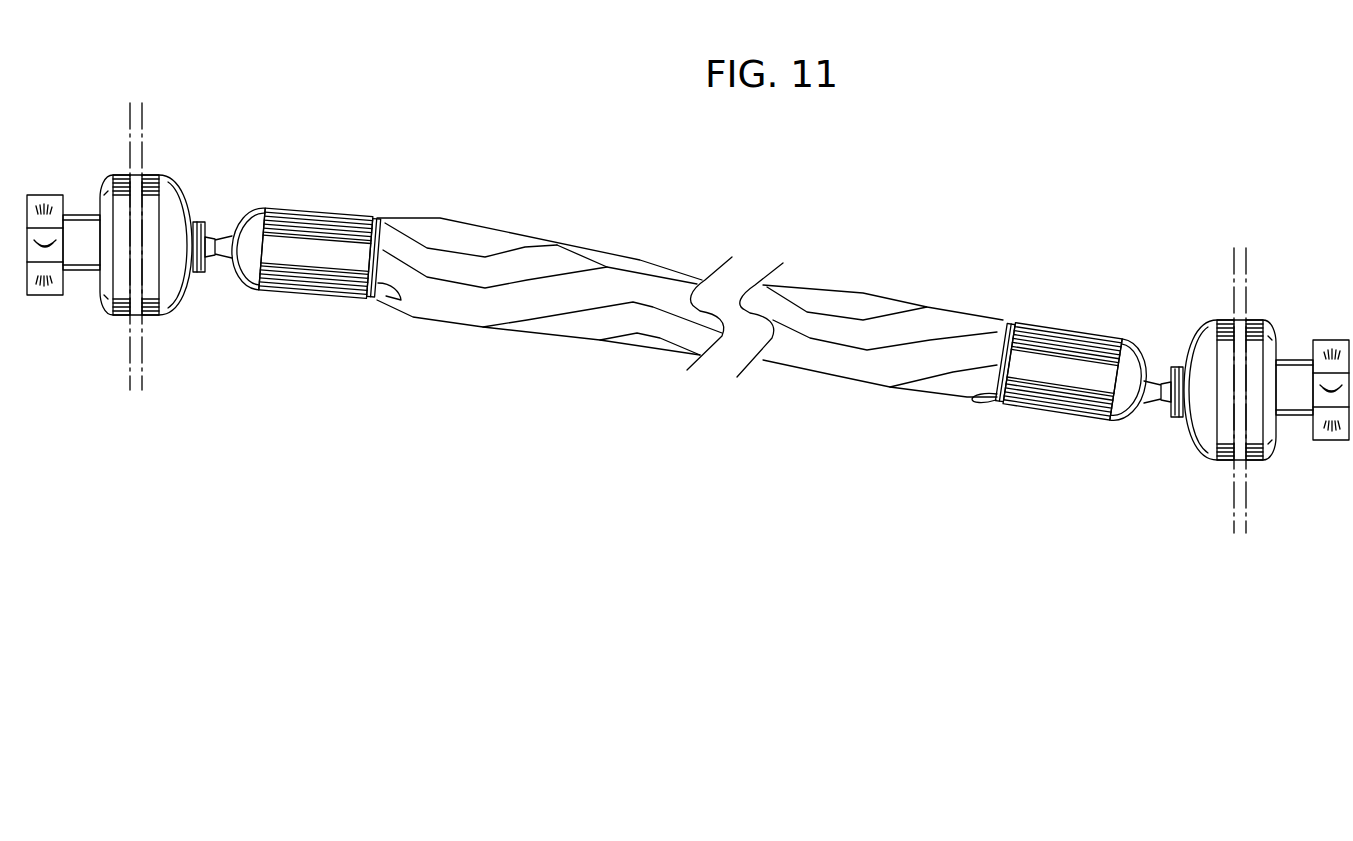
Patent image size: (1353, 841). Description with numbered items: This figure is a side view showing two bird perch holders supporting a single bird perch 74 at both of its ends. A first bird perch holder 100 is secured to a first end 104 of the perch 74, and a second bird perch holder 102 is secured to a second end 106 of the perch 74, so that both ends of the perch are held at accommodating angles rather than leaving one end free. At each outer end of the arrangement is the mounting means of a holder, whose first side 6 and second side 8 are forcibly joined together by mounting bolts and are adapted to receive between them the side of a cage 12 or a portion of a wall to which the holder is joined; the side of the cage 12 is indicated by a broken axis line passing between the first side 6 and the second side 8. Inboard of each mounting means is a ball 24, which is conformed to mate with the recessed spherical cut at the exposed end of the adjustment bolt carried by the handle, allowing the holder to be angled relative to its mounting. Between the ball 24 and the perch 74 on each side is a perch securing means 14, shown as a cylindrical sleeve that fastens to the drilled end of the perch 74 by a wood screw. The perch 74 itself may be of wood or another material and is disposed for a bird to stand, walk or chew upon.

The first side 6 is at (124, 173).
The second side 8 is at (167, 175).
The cage 12 is at (143, 115).
The grip sleeve 14 is at (290, 210).
The ball 24 is at (213, 260).
The perch 74 is at (553, 243).
The first bird perch holder 100 is at (333, 353).
The second bird perch holder 102 is at (1112, 485).
The first end 104 is at (385, 297).
The second end 106 is at (988, 398).